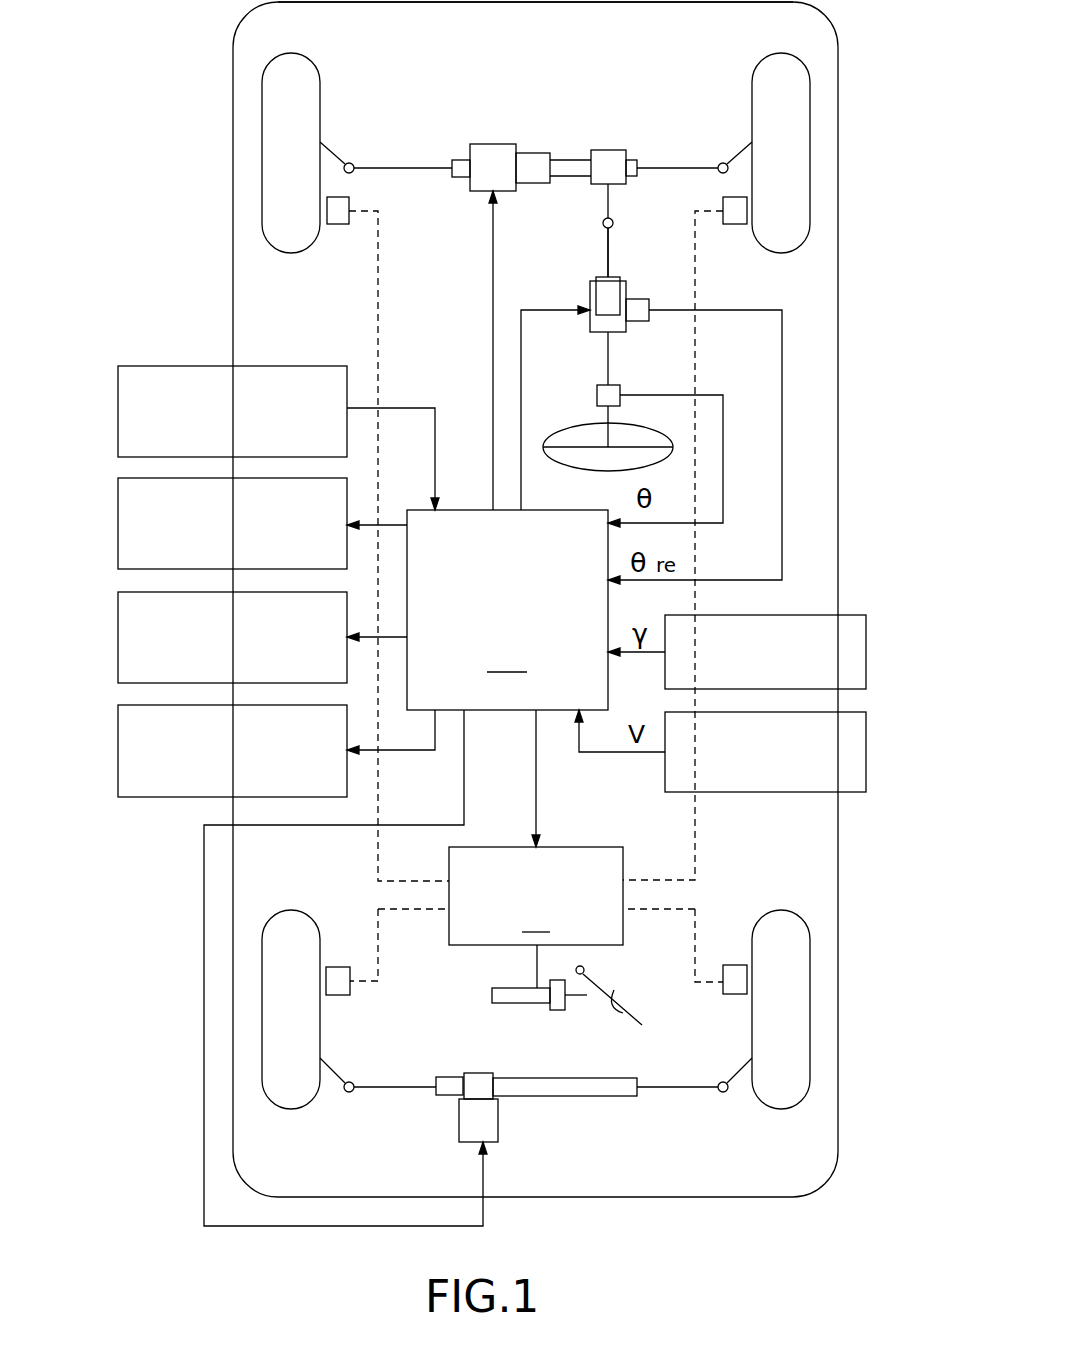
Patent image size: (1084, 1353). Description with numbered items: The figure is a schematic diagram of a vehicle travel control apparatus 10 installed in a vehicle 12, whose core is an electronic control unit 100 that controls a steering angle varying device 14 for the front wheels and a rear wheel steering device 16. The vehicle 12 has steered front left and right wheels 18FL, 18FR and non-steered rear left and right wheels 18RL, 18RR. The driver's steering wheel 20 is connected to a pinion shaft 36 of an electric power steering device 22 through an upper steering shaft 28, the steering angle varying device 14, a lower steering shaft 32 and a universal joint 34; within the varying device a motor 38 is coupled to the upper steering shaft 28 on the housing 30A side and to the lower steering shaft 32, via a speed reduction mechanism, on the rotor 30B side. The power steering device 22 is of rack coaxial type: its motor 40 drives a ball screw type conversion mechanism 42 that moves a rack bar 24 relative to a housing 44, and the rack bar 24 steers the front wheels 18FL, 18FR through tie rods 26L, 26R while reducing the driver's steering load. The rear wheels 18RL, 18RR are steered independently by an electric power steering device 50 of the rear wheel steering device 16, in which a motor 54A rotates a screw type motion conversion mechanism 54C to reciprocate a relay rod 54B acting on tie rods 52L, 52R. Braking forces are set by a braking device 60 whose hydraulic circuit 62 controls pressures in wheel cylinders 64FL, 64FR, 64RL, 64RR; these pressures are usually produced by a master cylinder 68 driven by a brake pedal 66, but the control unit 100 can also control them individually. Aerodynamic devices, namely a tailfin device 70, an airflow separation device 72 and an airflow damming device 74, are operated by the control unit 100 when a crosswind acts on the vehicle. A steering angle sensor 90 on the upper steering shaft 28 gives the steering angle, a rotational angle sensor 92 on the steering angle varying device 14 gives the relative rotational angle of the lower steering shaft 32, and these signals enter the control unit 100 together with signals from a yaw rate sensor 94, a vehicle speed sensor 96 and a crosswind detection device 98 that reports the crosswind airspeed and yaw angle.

The vehicle travel control apparatus 10 is at (634, 78).
The vehicle 12 is at (838, 440).
The steering angle varying device 14 is at (610, 307).
The rear wheel steering device 16 is at (538, 1105).
The front left wheel 18FL is at (262, 168).
The front right wheel 18FR is at (809, 165).
The rear left wheel 18RL is at (295, 910).
The rear right wheel 18RR is at (809, 1020).
The steering wheel 20 is at (588, 471).
The electric power steering device 22 is at (536, 169).
The rack bar 24 is at (407, 166).
The left tie rod 26L is at (332, 155).
The right tie rod 26R is at (745, 150).
The upper steering shaft 28 is at (610, 369).
The housing 30A is at (622, 290).
The rotor 30B is at (600, 297).
The lower steering shaft 32 is at (606, 256).
The universal joint 34 is at (603, 225).
The pinion shaft 36 is at (612, 199).
The motor 38 is at (613, 275).
The motor 40 is at (495, 144).
The conversion mechanism 42 is at (533, 184).
The housing 44 is at (465, 178).
The electric power steering device 50 is at (519, 1072).
The left rear tie rod 52L is at (336, 1076).
The right rear tie rod 52R is at (741, 1076).
The motor 54A is at (498, 1116).
The relay rod 54B is at (660, 1097).
The motion conversion mechanism 54C is at (478, 1080).
The braking device 60 is at (546, 867).
The hydraulic circuit 62 is at (536, 896).
The front left wheel cylinder 64FL is at (338, 225).
The front right wheel cylinder 64FR is at (734, 224).
The rear left wheel cylinder 64RL is at (345, 996).
The rear right wheel cylinder 64RR is at (733, 995).
The brake pedal 66 is at (613, 992).
The master cylinder 68 is at (513, 987).
The tailfin device 70 is at (118, 521).
The airflow separation device 72 is at (118, 635).
The airflow damming device 74 is at (118, 749).
The steering angle sensor 90 is at (597, 394).
The rotational angle sensor 92 is at (640, 322).
The yaw rate sensor 94 is at (868, 652).
The vehicle speed sensor 96 is at (868, 751).
The crosswind detection device 98 is at (118, 410).
The electronic control unit 100 is at (507, 610).